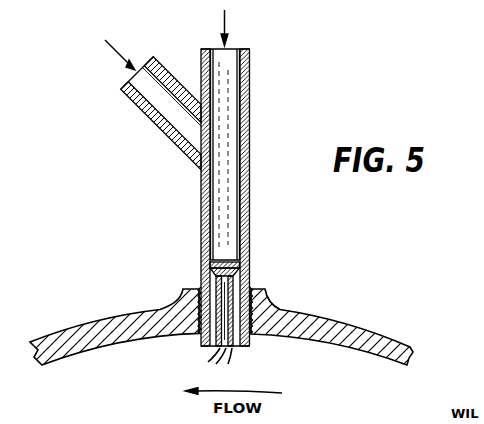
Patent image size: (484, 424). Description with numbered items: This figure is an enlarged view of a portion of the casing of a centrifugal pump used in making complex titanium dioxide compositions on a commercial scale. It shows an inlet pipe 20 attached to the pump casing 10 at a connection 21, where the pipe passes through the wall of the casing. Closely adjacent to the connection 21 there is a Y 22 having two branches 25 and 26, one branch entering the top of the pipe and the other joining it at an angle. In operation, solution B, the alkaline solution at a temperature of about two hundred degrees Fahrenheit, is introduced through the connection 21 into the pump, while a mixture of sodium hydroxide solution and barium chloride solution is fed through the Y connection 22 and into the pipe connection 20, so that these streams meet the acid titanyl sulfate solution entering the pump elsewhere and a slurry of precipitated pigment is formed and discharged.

The pump casing 10 is at (377, 331).
The inlet pipe 20 is at (253, 222).
The connection 21 is at (222, 287).
The Y 22 is at (251, 101).
The branch 25 is at (129, 88).
The branch 26 is at (239, 49).